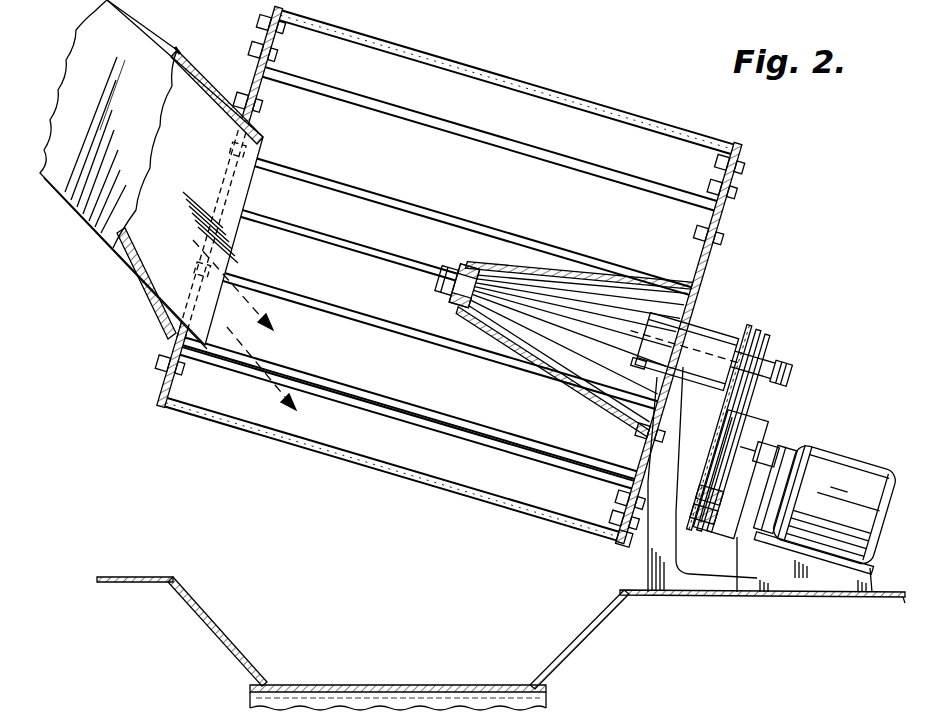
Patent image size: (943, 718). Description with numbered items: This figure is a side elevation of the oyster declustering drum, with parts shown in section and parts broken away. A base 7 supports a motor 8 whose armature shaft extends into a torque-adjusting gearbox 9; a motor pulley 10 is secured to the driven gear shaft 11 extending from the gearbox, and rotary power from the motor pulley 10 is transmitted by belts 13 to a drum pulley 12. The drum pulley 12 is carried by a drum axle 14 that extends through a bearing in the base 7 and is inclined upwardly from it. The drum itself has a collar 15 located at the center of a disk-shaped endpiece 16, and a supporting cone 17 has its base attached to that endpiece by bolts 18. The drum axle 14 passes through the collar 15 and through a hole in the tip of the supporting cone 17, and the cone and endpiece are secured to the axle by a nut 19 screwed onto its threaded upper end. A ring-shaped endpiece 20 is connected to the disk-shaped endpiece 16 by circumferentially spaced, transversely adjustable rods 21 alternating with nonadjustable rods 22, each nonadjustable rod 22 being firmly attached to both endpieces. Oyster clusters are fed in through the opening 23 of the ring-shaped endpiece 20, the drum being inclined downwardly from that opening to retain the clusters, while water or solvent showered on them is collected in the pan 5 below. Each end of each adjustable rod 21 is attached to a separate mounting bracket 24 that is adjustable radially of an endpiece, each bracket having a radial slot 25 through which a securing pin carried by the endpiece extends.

The pan 5 is at (620, 700).
The base 7 is at (671, 568).
The motor 8 is at (835, 505).
The torque-adjusting gearbox 9 is at (782, 456).
The motor pulley 10 is at (742, 506).
The driven gear shaft 11 is at (742, 490).
The drum pulley 12 is at (768, 340).
The belts 13 is at (768, 358).
The drum axle 14 is at (443, 270).
The collar 15 is at (672, 342).
The disk-shaped endpiece 16 is at (690, 284).
The supporting cone 17 is at (549, 262).
The bolts 18 is at (694, 250).
The nut 19 is at (447, 292).
The ring-shaped endpiece 20 is at (262, 77).
The transversely adjustable rods 21 is at (518, 89).
The nonadjustable rods 22 is at (438, 123).
The opening 23 is at (186, 290).
The mounting bracket 24 is at (737, 168).
The radial slot 25 is at (631, 540).